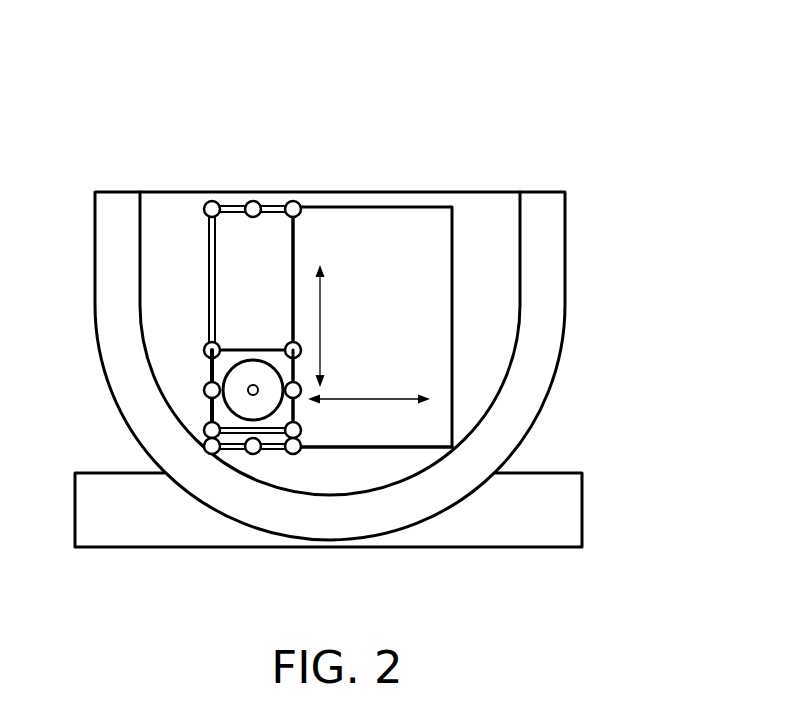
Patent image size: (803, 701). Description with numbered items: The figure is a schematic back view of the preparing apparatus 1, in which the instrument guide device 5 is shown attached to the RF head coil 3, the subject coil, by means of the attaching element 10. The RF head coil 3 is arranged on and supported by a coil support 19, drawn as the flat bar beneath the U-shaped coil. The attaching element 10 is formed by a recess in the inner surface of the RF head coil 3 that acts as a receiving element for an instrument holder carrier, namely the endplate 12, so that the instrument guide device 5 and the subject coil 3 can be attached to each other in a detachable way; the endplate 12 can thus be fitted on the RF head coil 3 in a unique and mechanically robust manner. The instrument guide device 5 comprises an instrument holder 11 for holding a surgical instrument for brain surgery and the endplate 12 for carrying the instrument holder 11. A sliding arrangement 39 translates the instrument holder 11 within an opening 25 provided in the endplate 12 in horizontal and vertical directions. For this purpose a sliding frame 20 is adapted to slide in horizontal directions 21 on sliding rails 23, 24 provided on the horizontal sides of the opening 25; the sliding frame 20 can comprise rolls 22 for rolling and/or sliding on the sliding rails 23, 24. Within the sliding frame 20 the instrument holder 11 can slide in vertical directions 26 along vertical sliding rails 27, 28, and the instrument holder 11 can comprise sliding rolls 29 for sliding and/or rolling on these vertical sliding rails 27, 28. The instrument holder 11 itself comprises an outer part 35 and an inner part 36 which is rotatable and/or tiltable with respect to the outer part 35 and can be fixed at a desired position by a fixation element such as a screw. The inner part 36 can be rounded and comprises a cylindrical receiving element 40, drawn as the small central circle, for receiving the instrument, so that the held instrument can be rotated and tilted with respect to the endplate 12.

The preparing apparatus 1 is at (563, 92).
The RF head coil 3 is at (565, 335).
The instrument guide device 5 is at (475, 169).
The attaching element 10 is at (513, 392).
The instrument holder 11 is at (201, 414).
The endplate 12 is at (495, 246).
The coil support 19 is at (583, 513).
The sliding frame 20 is at (198, 282).
The horizontal directions 21 is at (378, 400).
The rolls 22 is at (207, 205).
The sliding rail 23 is at (381, 195).
The sliding rail 24 is at (336, 461).
The opening 25 is at (430, 310).
The vertical directions 26 is at (334, 207).
The vertical sliding rail 27 is at (223, 244).
The vertical sliding rail 28 is at (288, 246).
The sliding rolls 29 is at (206, 347).
The outer part 35 is at (212, 342).
The inner part 36 is at (268, 420).
The sliding arrangement 39 is at (227, 181).
The cylindrical receiving element 40 is at (252, 396).